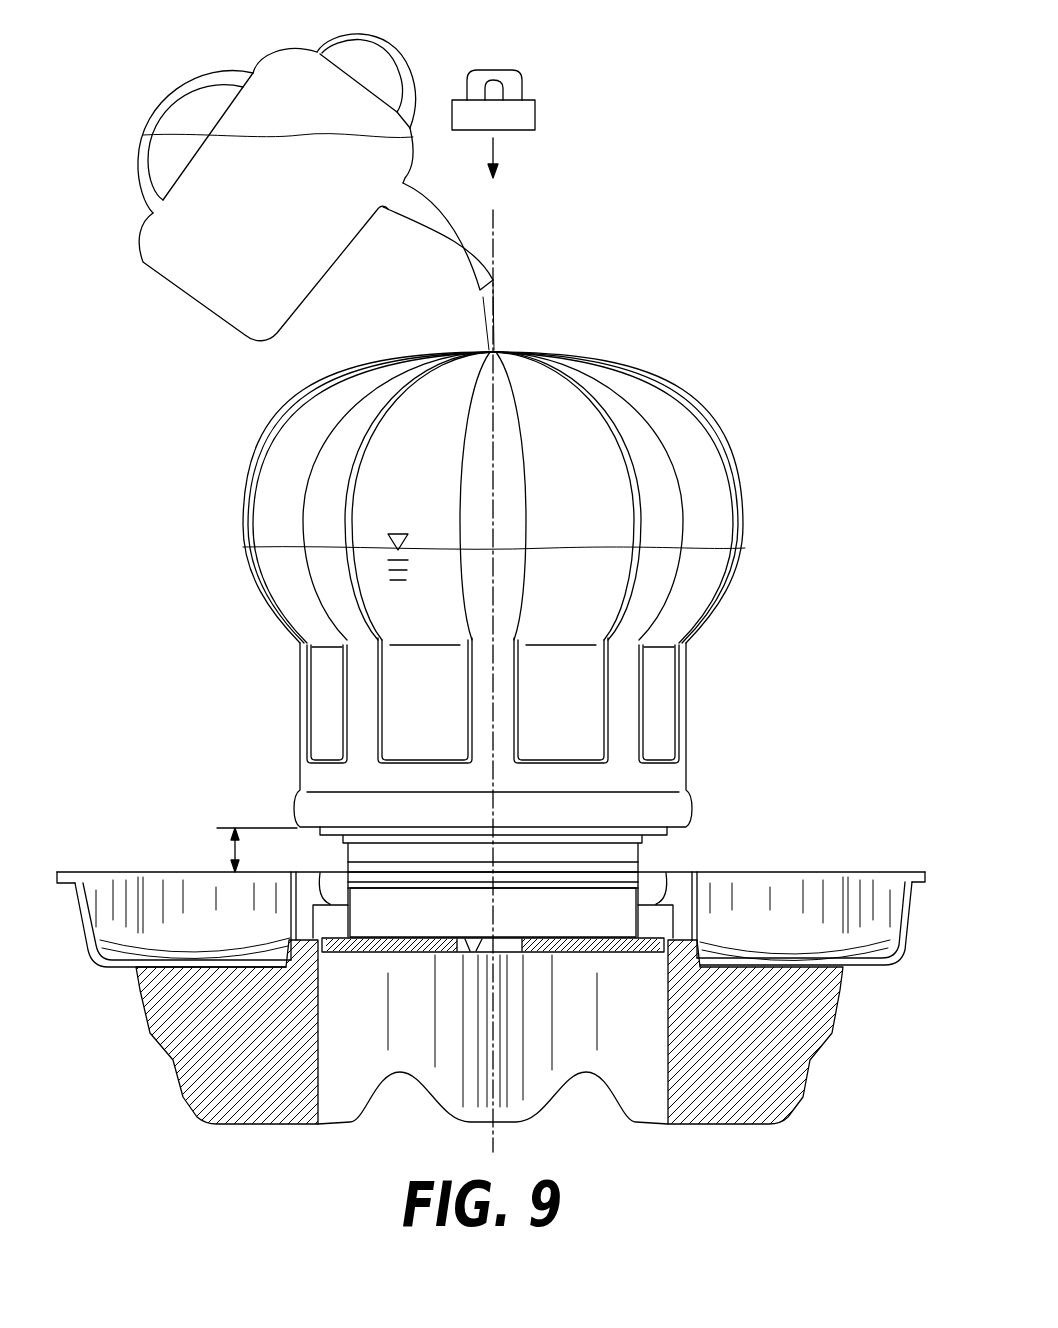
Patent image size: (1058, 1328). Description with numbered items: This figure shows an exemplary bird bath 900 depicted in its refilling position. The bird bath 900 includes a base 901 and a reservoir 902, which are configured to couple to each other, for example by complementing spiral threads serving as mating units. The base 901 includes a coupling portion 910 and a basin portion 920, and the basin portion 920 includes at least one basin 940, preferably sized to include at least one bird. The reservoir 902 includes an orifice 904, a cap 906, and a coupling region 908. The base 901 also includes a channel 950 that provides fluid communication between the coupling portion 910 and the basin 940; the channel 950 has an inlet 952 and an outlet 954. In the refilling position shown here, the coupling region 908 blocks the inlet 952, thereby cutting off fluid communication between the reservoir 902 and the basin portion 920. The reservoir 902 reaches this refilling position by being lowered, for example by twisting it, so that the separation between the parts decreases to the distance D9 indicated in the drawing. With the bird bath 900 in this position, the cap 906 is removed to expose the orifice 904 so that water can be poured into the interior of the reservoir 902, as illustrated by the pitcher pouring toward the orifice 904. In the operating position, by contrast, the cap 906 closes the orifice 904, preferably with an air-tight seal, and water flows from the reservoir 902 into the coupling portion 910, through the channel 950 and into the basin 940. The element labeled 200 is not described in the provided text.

The cap 906 is at (536, 118).
The orifice 904 is at (510, 313).
The reservoir 902 is at (745, 482).
The container 200 is at (282, 627).
The bird bath 900 is at (800, 768).
The coupling region 908 is at (433, 923).
The inlet 952 is at (346, 920).
The outlet 954 is at (280, 930).
The basin 940 is at (827, 897).
The basin portion 920 is at (908, 943).
The channel 950 is at (340, 948).
The base 901 is at (407, 950).
The coupling portion 910 is at (573, 948).
The distance D9 is at (232, 850).